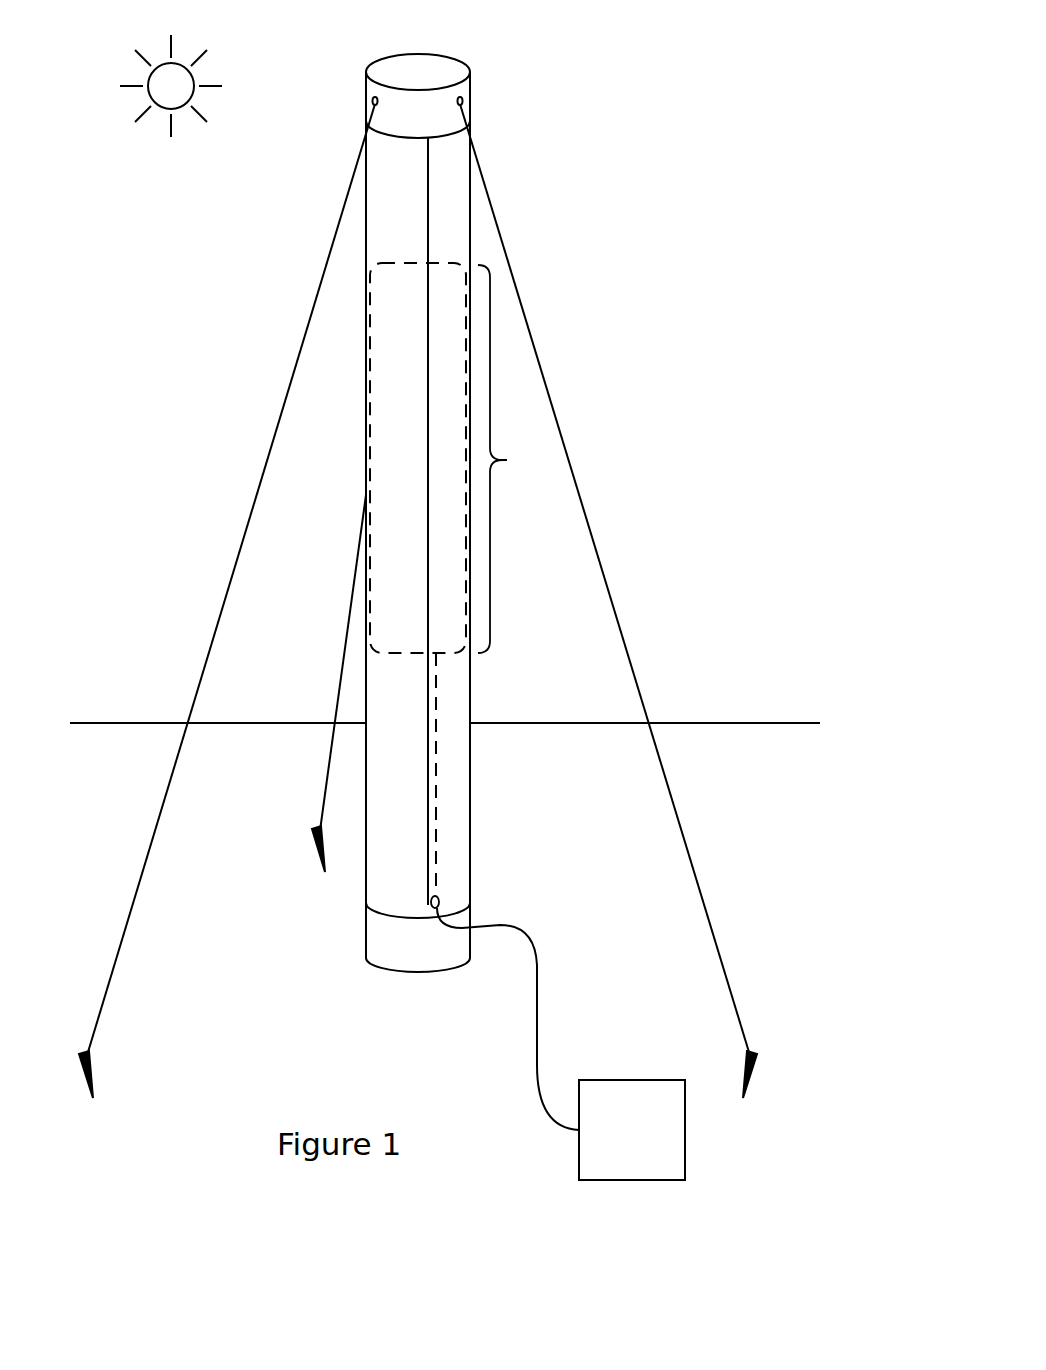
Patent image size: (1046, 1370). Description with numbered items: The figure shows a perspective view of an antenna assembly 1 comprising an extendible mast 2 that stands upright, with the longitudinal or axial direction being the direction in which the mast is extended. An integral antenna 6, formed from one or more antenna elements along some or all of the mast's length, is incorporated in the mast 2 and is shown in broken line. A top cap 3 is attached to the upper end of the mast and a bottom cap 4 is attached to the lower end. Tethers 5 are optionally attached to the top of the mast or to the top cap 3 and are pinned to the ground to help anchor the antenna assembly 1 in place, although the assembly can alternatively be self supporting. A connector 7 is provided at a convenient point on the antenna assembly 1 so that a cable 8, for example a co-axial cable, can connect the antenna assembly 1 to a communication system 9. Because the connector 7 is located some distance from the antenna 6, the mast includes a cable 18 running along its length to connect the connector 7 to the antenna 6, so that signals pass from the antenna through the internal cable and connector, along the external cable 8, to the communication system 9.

The antenna assembly 1 is at (722, 147).
The extendible mast 2 is at (383, 309).
The top cap 3 is at (448, 72).
The bottom cap 4 is at (393, 955).
The tethers 5 is at (609, 597).
The integral antenna 6 is at (505, 459).
The connector 7 is at (444, 890).
The cable 8 is at (540, 1012).
The communication system 9 is at (642, 1141).
The cable 18 is at (436, 795).